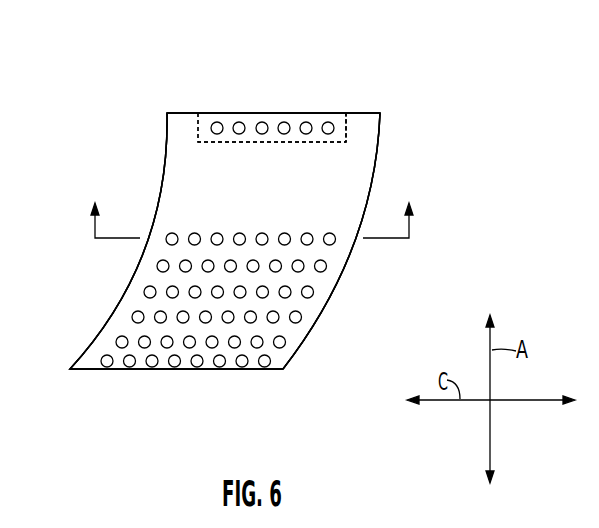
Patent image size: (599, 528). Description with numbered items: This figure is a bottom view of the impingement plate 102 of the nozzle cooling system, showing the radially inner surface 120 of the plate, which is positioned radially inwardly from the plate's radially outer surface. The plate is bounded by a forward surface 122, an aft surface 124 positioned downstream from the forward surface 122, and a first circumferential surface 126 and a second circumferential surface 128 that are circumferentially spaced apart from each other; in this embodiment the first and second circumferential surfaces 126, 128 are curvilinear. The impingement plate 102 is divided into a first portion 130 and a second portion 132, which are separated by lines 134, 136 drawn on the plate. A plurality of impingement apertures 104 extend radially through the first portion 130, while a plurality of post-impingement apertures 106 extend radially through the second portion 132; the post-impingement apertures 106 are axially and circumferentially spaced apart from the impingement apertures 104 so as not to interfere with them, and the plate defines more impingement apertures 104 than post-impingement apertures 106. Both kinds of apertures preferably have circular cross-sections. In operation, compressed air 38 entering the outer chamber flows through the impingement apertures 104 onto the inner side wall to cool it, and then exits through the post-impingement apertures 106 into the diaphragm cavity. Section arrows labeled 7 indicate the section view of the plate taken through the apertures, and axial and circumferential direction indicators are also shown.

The impingement plate 102 is at (88, 99).
The impingement apertures 104 is at (218, 233).
The post-impingement apertures 106 is at (216, 121).
The radially inner surface 120 is at (364, 177).
The forward surface 122 is at (250, 112).
The aft surface 124 is at (100, 370).
The first circumferential surface 126 is at (97, 338).
The second circumferential surface 128 is at (351, 256).
The first portion 130 is at (243, 330).
The second portion 132 is at (272, 123).
The line 134 is at (197, 125).
The line 136 is at (213, 144).
The compressed air 38 is at (347, 128).
The section line for FIG. 7 is at (252, 204).